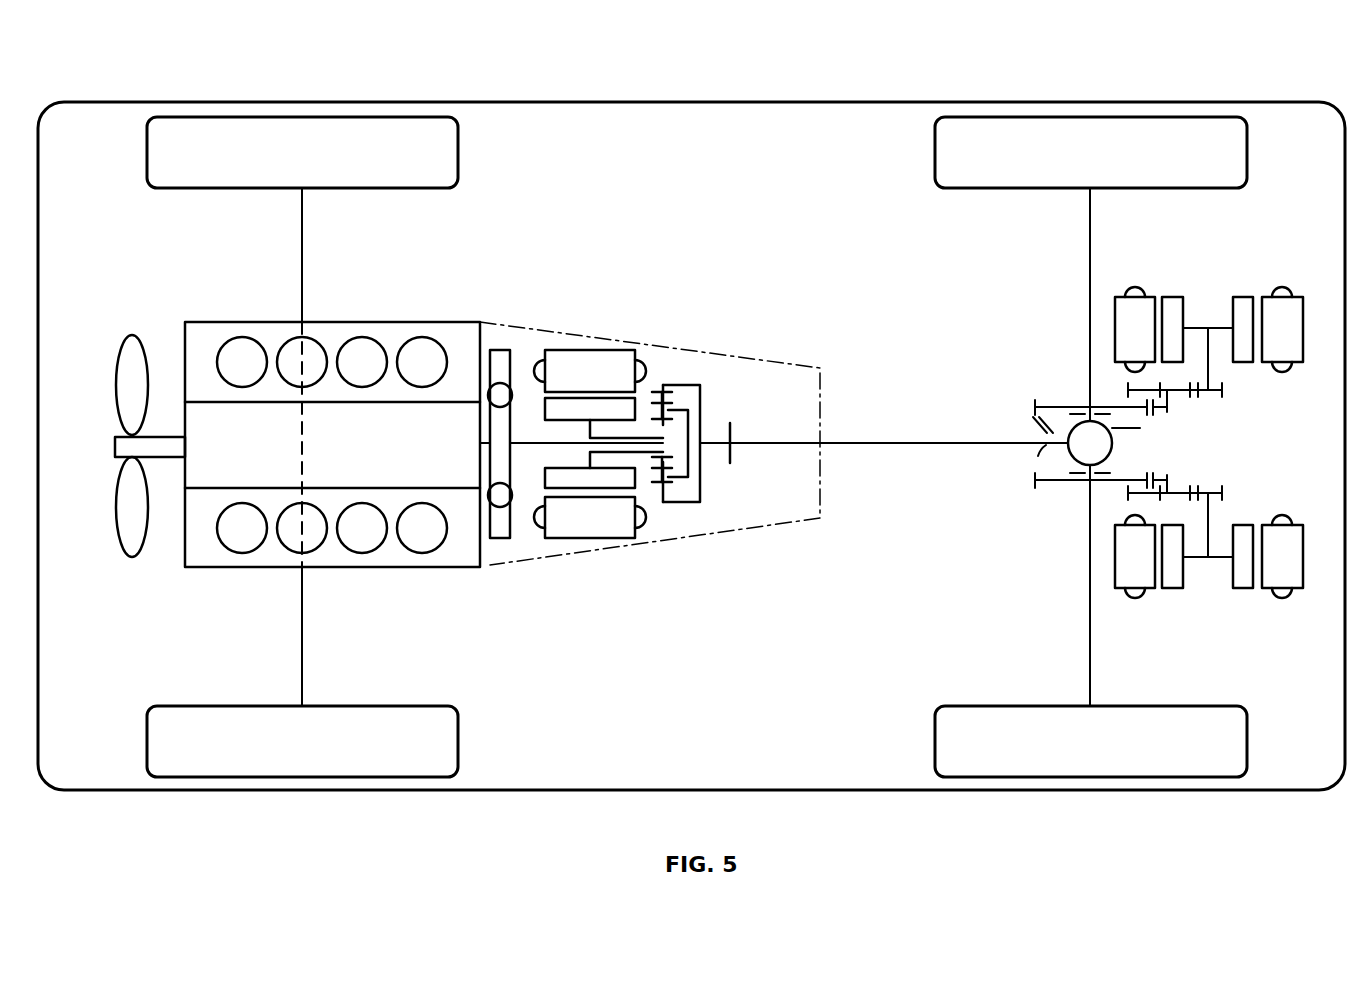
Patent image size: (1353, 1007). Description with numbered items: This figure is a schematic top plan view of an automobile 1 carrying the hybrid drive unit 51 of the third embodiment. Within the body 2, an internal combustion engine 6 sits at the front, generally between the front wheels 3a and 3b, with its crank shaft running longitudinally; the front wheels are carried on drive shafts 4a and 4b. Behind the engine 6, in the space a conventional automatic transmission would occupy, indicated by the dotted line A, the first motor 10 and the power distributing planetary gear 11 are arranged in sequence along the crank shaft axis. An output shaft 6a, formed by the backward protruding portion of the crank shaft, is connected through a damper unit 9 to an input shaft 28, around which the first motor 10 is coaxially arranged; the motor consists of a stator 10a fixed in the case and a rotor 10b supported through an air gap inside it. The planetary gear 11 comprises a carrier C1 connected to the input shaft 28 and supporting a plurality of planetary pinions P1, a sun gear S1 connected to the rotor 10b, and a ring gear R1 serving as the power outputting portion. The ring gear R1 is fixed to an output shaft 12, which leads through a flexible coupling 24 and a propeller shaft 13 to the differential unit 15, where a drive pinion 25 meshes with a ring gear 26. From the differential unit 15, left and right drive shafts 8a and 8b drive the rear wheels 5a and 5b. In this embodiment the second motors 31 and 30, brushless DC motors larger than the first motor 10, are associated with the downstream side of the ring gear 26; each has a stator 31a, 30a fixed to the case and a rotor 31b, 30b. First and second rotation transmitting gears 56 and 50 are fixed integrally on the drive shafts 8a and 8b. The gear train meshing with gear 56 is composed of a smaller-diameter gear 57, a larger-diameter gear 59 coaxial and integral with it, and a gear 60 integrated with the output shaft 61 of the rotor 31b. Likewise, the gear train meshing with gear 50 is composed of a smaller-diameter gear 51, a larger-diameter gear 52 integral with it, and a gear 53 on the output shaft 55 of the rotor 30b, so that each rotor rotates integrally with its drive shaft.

The automobile 1 is at (805, 75).
The body 2 is at (712, 102).
The front wheel 3a is at (458, 743).
The front wheel 3b is at (458, 145).
The drive shaft 4a is at (302, 626).
The drive shaft 4b is at (302, 232).
The rear wheel 5a is at (1247, 737).
The rear wheel 5b is at (1247, 145).
The internal combustion engine 6 is at (395, 322).
The output shaft 6a is at (490, 438).
The drive shaft 8a is at (1090, 614).
The drive shaft 8b is at (1090, 268).
The damper unit 9 is at (517, 352).
The first motor 10 is at (680, 268).
The stator 10a is at (588, 358).
The rotor 10b is at (623, 408).
The power distributing planetary gear 11 is at (688, 383).
The output shaft 12 is at (712, 440).
The propeller shaft 13 is at (852, 440).
The differential unit 15 is at (1010, 421).
The flexible coupling 24 is at (730, 433).
The drive pinion 25 is at (1040, 449).
The ring gear 26 is at (1140, 428).
The input shaft 28 is at (528, 440).
The motor 30 is at (1193, 250).
The stator 30a is at (1122, 300).
The rotor 30b is at (1170, 300).
The motor 31 is at (1195, 645).
The stator 31a is at (1122, 588).
The rotor 31b is at (1172, 588).
The second rotation transmitting gear 50 is at (1057, 406).
The hybrid drive unit 51 is at (905, 280).
The gear 52 is at (1140, 392).
The gear 53 is at (1222, 395).
The output shaft 55 is at (1213, 370).
The first rotation transmitting gear 56 is at (1052, 485).
The gear 57 is at (1170, 480).
The gear 59 is at (1135, 496).
The gear 60 is at (1228, 488).
The output shaft 61 is at (1215, 516).
The dotted line A is at (568, 322).
The sun gear S1 is at (672, 448).
The carrier C1 is at (690, 462).
The ring gear R1 is at (700, 482).
The planetary pinions P1 is at (668, 485).